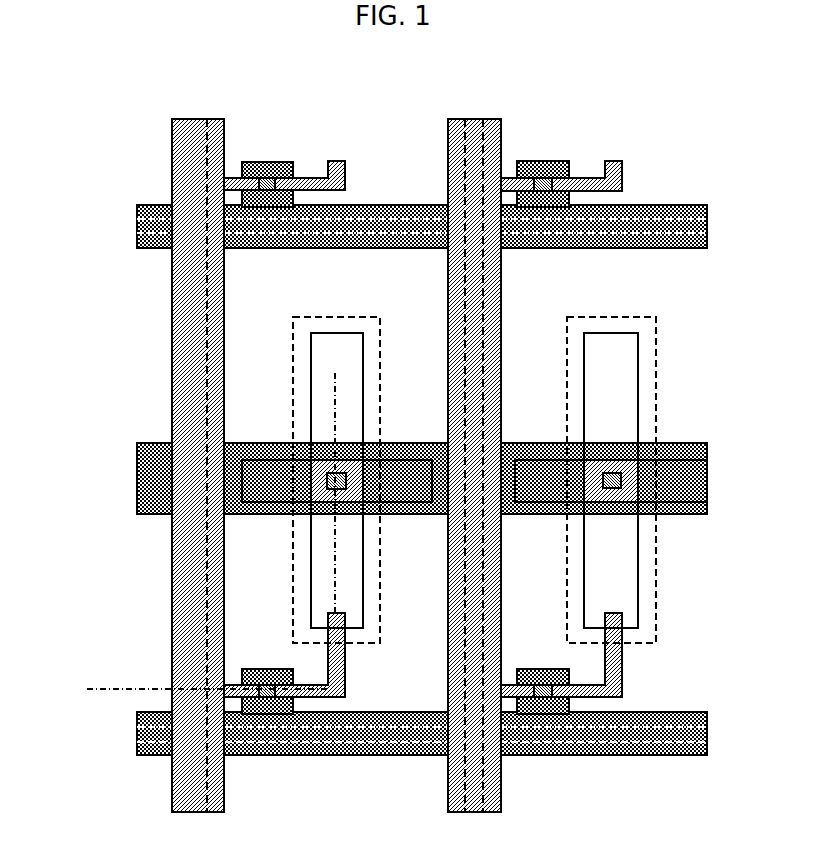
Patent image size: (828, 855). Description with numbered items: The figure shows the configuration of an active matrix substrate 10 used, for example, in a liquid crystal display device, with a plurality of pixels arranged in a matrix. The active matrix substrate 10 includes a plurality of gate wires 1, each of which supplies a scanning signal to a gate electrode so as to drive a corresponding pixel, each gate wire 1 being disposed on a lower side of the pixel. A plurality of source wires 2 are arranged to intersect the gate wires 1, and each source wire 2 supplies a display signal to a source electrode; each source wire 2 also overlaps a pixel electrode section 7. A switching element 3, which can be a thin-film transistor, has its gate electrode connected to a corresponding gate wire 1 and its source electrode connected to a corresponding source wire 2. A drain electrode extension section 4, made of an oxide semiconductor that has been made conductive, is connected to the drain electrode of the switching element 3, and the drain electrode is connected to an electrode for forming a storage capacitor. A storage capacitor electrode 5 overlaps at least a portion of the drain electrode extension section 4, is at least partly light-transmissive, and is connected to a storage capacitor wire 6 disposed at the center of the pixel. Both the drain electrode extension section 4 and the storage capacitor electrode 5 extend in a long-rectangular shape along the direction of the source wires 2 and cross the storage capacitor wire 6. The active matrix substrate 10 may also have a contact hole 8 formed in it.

The gate wire 1 is at (150, 732).
The source wire 2 is at (190, 594).
The switching element 3 is at (266, 698).
The drain electrode extension section 4 is at (363, 610).
The storage capacitor electrode 5 is at (350, 316).
The storage capacitor wire 6 is at (150, 472).
The pixel electrode section 7 is at (208, 283).
The contact hole 8 is at (613, 481).
The active matrix substrate 10 is at (418, 104).